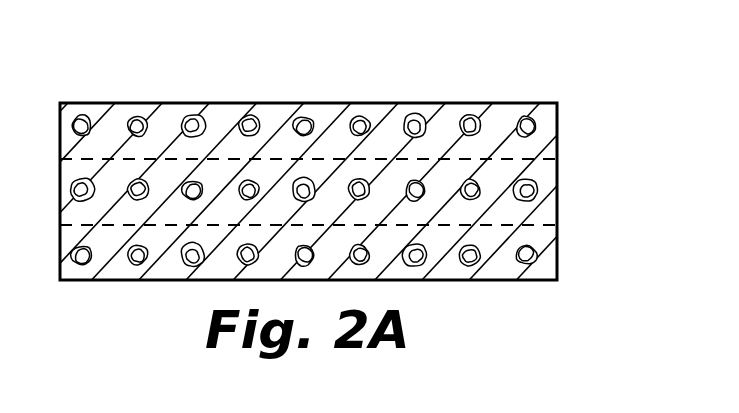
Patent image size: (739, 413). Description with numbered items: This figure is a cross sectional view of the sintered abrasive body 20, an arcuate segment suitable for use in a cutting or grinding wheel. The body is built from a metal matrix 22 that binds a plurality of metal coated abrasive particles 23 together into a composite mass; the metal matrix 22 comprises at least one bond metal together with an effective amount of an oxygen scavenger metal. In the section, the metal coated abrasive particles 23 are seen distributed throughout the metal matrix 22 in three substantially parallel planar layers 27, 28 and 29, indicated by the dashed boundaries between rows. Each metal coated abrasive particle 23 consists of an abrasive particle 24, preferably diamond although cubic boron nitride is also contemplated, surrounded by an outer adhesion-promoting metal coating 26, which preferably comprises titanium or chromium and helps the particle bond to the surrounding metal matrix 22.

The sintered abrasive body 20 is at (556, 68).
The metal matrix 22 is at (277, 117).
The metal coated abrasive particles 23 is at (204, 98).
The abrasive particle 24 is at (362, 118).
The outer adhesion-promoting metal coating 26 is at (382, 120).
The planar layer 27 is at (548, 138).
The planar layer 28 is at (548, 174).
The planar layer 29 is at (548, 236).